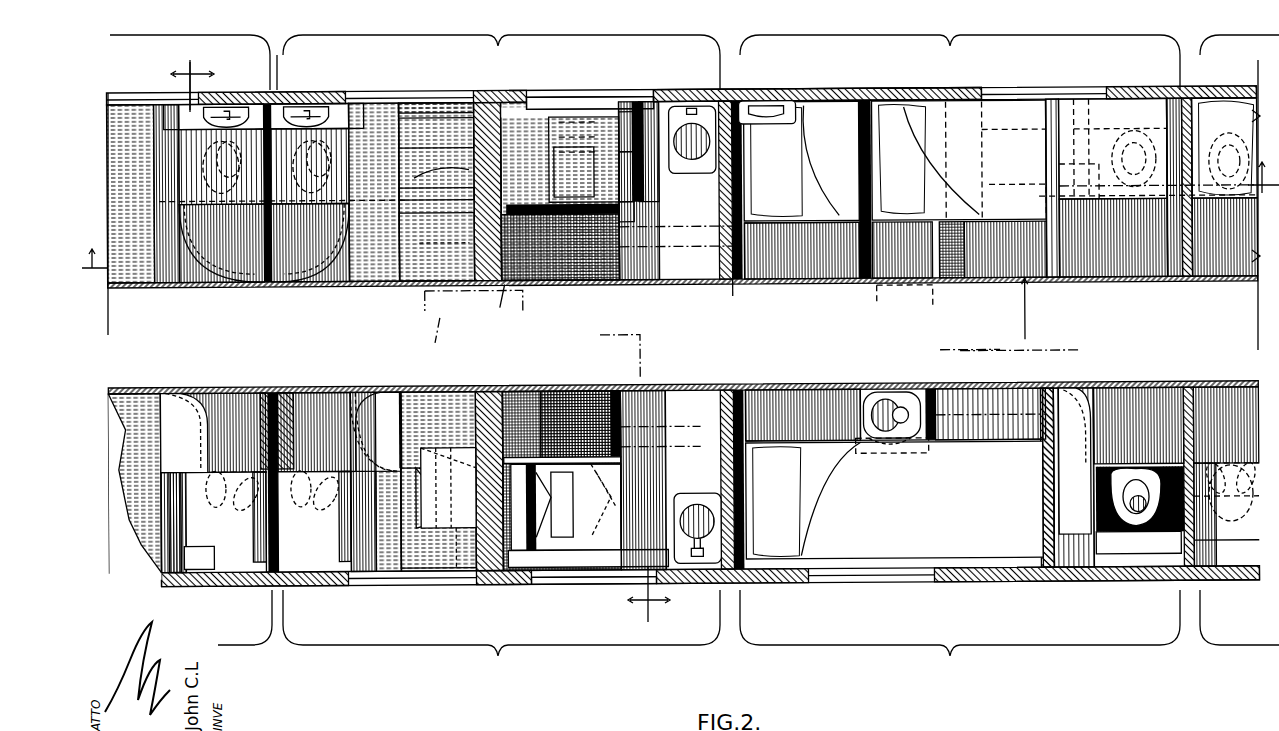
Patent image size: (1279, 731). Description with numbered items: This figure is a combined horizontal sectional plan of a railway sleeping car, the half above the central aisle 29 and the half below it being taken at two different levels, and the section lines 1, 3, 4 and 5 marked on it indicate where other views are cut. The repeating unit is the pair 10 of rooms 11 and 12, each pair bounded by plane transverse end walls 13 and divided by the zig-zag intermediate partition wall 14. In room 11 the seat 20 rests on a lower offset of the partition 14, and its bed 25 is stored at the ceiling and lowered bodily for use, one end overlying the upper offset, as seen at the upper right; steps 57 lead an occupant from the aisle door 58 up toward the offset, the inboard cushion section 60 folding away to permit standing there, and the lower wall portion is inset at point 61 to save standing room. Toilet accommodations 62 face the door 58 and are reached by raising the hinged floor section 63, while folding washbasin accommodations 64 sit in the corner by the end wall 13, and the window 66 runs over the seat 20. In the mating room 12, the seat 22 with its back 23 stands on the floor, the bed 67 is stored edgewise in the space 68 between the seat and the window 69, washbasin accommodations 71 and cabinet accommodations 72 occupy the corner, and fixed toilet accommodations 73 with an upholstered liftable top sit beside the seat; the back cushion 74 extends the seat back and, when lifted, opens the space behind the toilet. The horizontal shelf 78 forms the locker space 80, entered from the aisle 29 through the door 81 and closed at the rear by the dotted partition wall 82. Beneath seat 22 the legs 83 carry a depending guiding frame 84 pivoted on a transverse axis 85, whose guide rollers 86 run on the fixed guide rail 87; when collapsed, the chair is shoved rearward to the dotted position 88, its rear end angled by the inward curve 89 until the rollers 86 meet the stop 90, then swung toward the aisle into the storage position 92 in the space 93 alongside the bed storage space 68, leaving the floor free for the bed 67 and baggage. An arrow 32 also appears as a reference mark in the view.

The section line 1- 1 is at (680, 205).
The section line 3- 3 is at (410, 341).
The section line 4- 4 is at (439, 336).
The door 5 is at (243, 274).
The pair of rooms 10 is at (694, 343).
The room 11 is at (719, 385).
The room 12 is at (708, 335).
The end wall 13 is at (1205, 419).
The intermediate partition wall 14 is at (848, 288).
The seat 20 is at (400, 515).
The seat 22 is at (642, 278).
The seat back 23 is at (584, 159).
The bed 25 is at (953, 125).
The aisle 29 is at (1028, 370).
The toilet room 32 is at (1208, 110).
The steps 57 is at (375, 386).
The aisle door 58 is at (345, 290).
The inboard cushion section 60 is at (125, 288).
The offset point 61 is at (405, 308).
The toilet accommodations 62 is at (1235, 466).
The hinged floor section 63 is at (1142, 595).
The folding washbasin accommodations 64 is at (250, 108).
The window 66 is at (445, 105).
The bed 67 is at (630, 104).
The bed storage space 68 is at (575, 108).
The window 69 is at (538, 102).
The washbasin accommodations 71 is at (722, 492).
The cabinet accommodations 72 is at (414, 336).
The fixed toilet accommodations 73 is at (858, 413).
The back cushion 74 is at (510, 306).
The horizontal shelf 78 is at (1046, 390).
The locker space 80 is at (983, 395).
The locker door 81 is at (960, 356).
The partition wall 82 is at (460, 392).
The legs 83 is at (631, 212).
The depending guiding frame 84 is at (638, 323).
The transverse axis 85 is at (584, 320).
The guide rollers 86 is at (388, 466).
The guide rail 87 is at (506, 348).
The first dotted-line chair position 88 is at (456, 567).
The inward curve 89 is at (437, 347).
The stop 90 is at (408, 535).
The second dotted-line storage position 92 is at (449, 478).
The chair storage space 93 is at (400, 438).